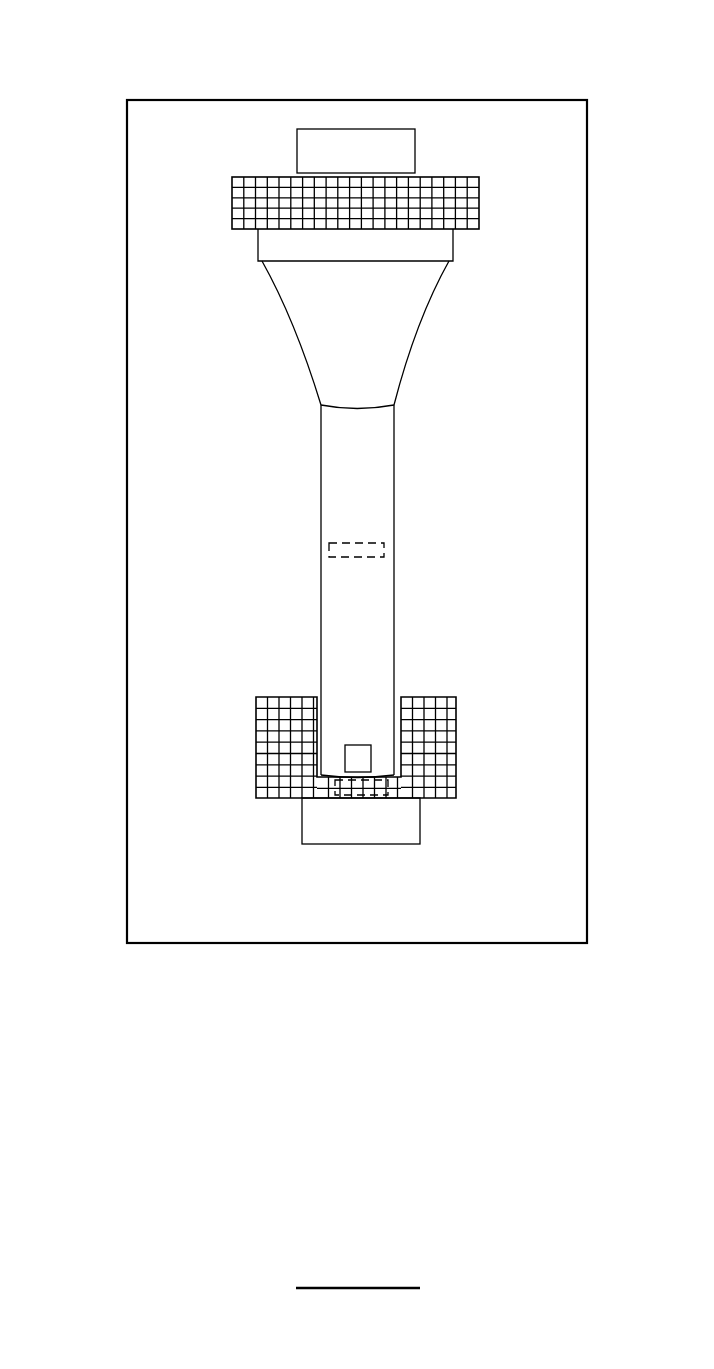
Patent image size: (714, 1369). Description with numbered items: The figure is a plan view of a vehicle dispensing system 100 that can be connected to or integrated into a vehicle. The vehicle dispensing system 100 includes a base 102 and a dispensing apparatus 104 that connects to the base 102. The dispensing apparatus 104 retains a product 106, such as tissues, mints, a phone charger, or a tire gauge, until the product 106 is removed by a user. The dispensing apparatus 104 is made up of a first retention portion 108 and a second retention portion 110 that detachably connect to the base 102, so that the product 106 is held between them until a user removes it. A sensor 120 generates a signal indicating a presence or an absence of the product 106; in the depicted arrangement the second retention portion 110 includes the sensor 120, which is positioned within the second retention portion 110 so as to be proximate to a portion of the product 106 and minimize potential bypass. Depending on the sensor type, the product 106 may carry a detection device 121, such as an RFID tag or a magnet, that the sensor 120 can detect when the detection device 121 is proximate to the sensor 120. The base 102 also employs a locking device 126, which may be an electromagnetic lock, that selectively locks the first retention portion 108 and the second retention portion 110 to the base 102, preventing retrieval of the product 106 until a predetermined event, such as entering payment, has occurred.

The vehicle dispensing system 100 is at (150, 36).
The base 102 is at (127, 162).
The dispensing apparatus 104 is at (261, 153).
The product 106 is at (321, 573).
The first retention portion 108 is at (232, 200).
The second retention portion 110 is at (256, 748).
The sensor 120 is at (384, 551).
The detection device 121 is at (350, 742).
The locking device 126 is at (415, 151).